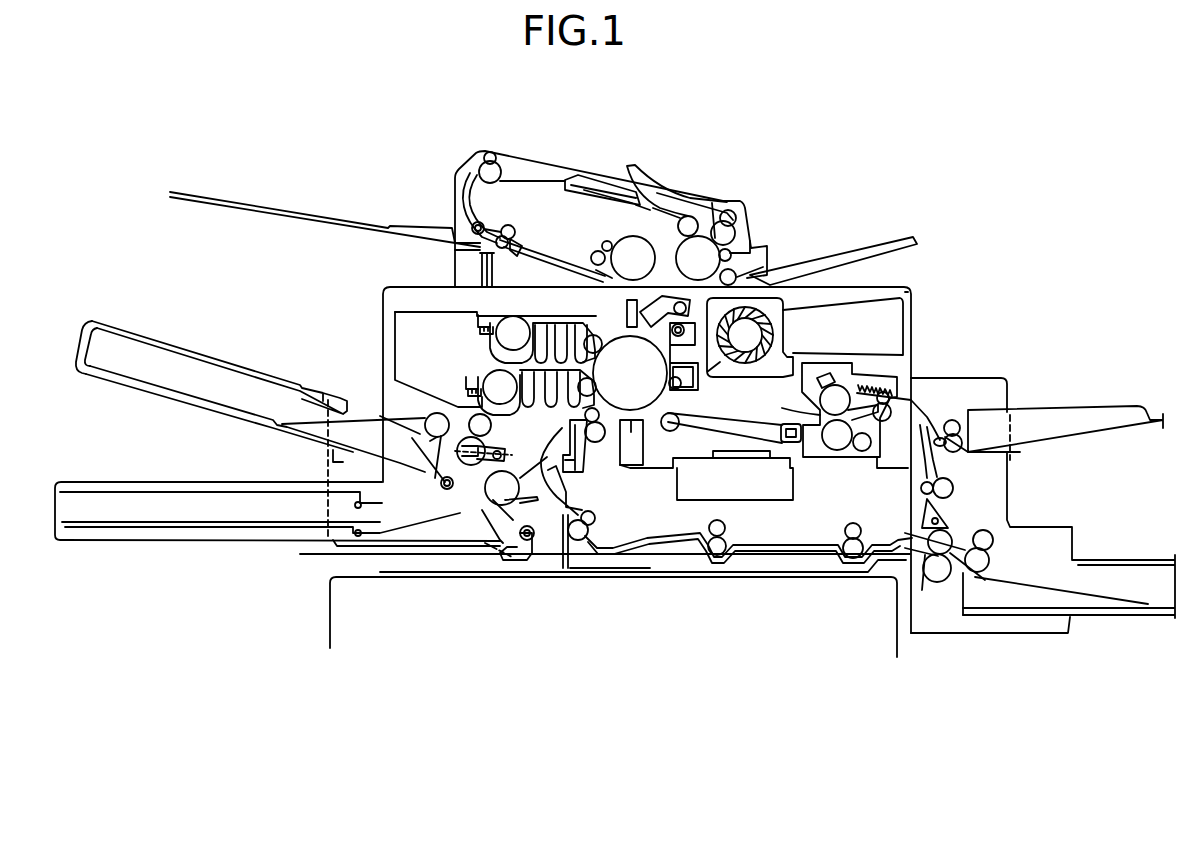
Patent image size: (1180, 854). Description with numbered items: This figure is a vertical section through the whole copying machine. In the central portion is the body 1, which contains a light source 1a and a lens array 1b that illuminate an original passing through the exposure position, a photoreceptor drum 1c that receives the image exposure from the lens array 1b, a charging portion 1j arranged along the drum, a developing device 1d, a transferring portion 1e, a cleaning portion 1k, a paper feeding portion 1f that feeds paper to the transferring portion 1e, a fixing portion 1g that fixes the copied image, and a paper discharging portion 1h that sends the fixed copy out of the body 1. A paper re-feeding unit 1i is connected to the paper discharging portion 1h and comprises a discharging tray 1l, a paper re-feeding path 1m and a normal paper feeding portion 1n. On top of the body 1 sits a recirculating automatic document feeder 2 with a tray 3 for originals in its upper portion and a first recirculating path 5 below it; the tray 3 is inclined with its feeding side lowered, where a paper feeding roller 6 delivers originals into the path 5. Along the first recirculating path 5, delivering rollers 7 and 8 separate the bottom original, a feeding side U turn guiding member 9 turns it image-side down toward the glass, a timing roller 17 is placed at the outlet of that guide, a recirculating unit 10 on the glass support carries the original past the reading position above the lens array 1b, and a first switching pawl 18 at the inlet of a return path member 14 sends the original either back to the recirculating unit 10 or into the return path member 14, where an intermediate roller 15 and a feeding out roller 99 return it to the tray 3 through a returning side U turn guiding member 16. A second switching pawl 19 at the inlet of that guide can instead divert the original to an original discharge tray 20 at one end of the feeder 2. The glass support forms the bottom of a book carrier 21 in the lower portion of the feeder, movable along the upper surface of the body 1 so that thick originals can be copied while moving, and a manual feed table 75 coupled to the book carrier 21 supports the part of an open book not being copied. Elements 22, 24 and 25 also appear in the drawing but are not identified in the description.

The body 1 is at (373, 347).
The light source 1a is at (672, 307).
The lens array 1b is at (627, 301).
The photoreceptor drum 1c is at (630, 373).
The developing device 1d is at (567, 380).
The transferring portion 1e is at (631, 466).
The paper feeding portion 1f is at (463, 517).
The fixing portion 1g is at (820, 418).
The paper discharging portion 1h is at (901, 367).
The paper re-feeding unit 1i is at (1007, 505).
The charging portion 1j is at (652, 308).
The cleaning portion 1k is at (700, 385).
The discharging tray 1l is at (1098, 424).
The paper re-feeding path 1m is at (946, 468).
The normal paper feeding portion 1n is at (1104, 580).
The automatic document feeder 2 is at (446, 189).
The tray 3 is at (552, 178).
The first recirculating path 5 is at (590, 253).
The paper feeding roller 6 is at (690, 216).
The delivering roller 7 is at (735, 233).
The delivering roller 8 is at (736, 213).
The feeding side U turn guiding member 9 is at (735, 253).
The recirculating unit 10 is at (668, 200).
The return path member 14 is at (580, 258).
The intermediate roller 15 is at (514, 239).
The returning side U turn guiding member 16 is at (455, 214).
The timing roller 17 is at (745, 272).
The first switching pawl 18 is at (598, 274).
The second switching pawl 19 is at (455, 250).
The original discharge tray 20 is at (310, 218).
The book carrier 21 is at (505, 270).
The document guide arm 22 is at (671, 196).
The light source 24 is at (600, 178).
The lens array 25 is at (608, 196).
The manual feed table 75 is at (860, 249).
The feeding out roller 99 is at (490, 163).